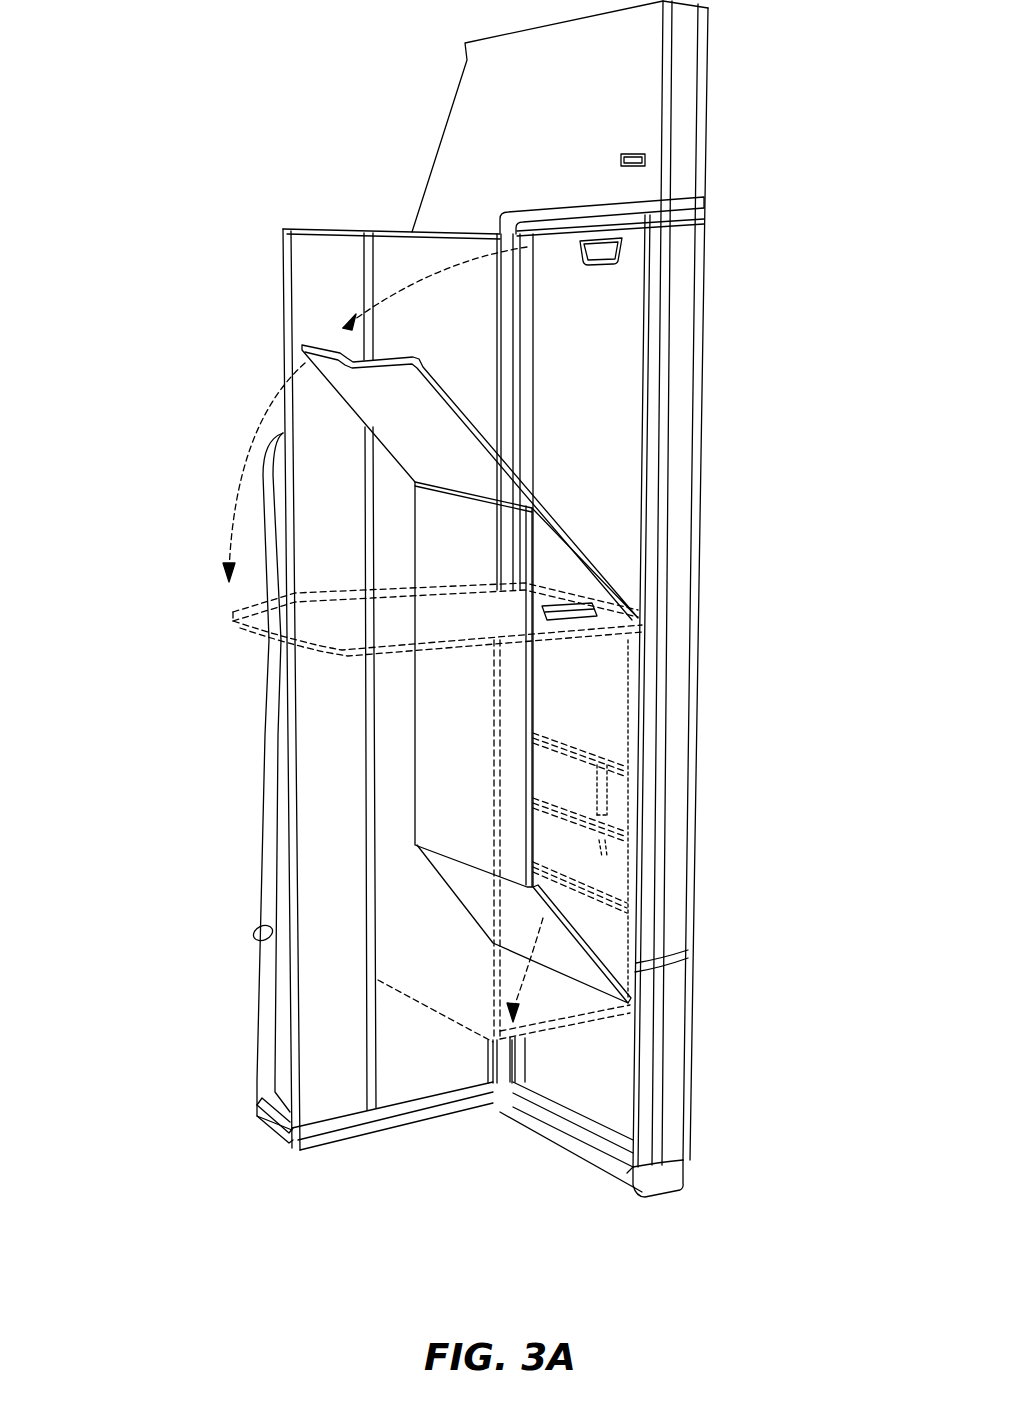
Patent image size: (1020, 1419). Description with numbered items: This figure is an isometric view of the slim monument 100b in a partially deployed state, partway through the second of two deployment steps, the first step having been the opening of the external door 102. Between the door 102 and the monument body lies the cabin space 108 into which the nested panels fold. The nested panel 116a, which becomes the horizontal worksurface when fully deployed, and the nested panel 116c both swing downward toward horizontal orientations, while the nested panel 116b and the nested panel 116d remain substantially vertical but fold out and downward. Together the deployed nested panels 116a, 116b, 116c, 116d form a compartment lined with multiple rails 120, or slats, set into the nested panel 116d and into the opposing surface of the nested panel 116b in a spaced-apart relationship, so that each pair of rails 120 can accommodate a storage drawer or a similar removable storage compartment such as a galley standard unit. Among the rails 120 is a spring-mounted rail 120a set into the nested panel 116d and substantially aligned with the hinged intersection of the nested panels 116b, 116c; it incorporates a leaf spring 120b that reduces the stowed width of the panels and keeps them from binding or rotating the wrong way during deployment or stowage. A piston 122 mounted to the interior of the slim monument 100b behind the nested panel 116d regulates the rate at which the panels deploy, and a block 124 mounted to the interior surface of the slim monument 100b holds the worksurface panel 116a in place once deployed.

The slim monument 100b is at (125, 72).
The external door 102 is at (317, 259).
The cabin space 108 is at (231, 1079).
The nested panel 116a is at (443, 428).
The nested panel 116b is at (460, 727).
The nested panel 116c is at (550, 1007).
The nested panel 116d is at (600, 918).
The rails 120 is at (238, 470).
The spring-mounted rail 120a is at (583, 818).
The leaf spring 120b is at (550, 800).
The piston 122 is at (602, 793).
The block 124 is at (567, 613).